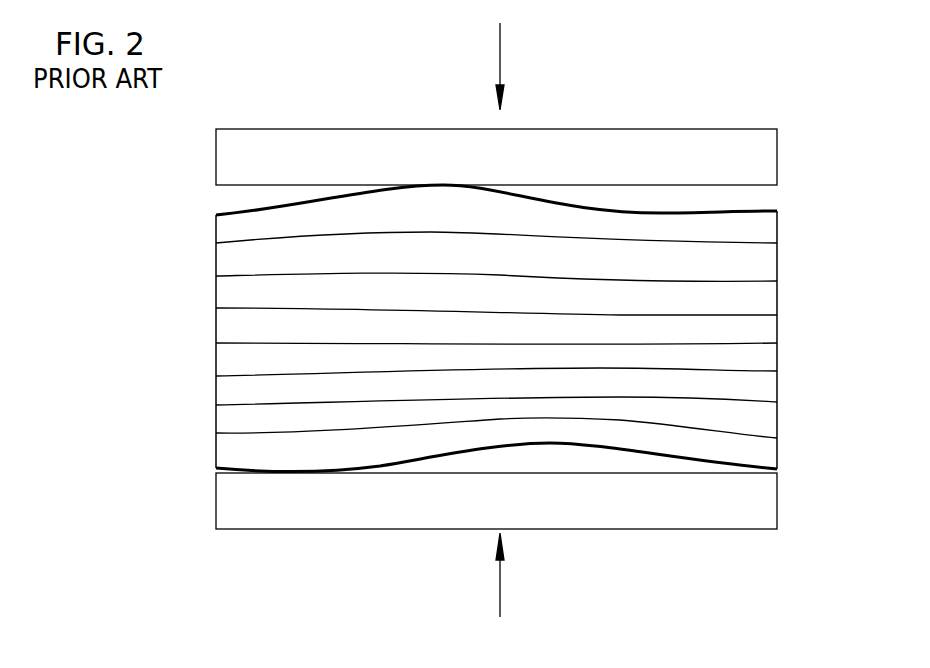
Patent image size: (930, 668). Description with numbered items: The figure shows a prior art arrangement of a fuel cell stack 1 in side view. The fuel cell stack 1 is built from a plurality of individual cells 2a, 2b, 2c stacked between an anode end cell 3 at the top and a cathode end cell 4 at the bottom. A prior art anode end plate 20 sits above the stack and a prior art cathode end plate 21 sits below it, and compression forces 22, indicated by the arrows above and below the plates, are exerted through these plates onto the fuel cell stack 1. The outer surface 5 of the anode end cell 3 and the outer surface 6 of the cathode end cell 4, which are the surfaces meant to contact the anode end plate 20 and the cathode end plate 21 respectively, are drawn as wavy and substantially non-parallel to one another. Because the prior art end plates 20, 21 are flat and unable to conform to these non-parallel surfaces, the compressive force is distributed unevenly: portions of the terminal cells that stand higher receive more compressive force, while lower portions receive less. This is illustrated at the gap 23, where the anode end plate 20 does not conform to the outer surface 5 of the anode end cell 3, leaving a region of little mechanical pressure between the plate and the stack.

The fuel cell stack 1 is at (512, 122).
The individual cell 2a is at (778, 301).
The individual cell 2b is at (778, 325).
The individual cell 2c is at (778, 355).
The anode end cell 3 is at (200, 216).
The cathode end cell 4 is at (214, 449).
The outer surface 5 is at (222, 213).
The outer surface 6 is at (505, 447).
The prior art anode end plate 20 is at (277, 129).
The prior art cathode end plate 21 is at (292, 530).
The compression forces 22 is at (500, 68).
The gap 23 is at (722, 199).